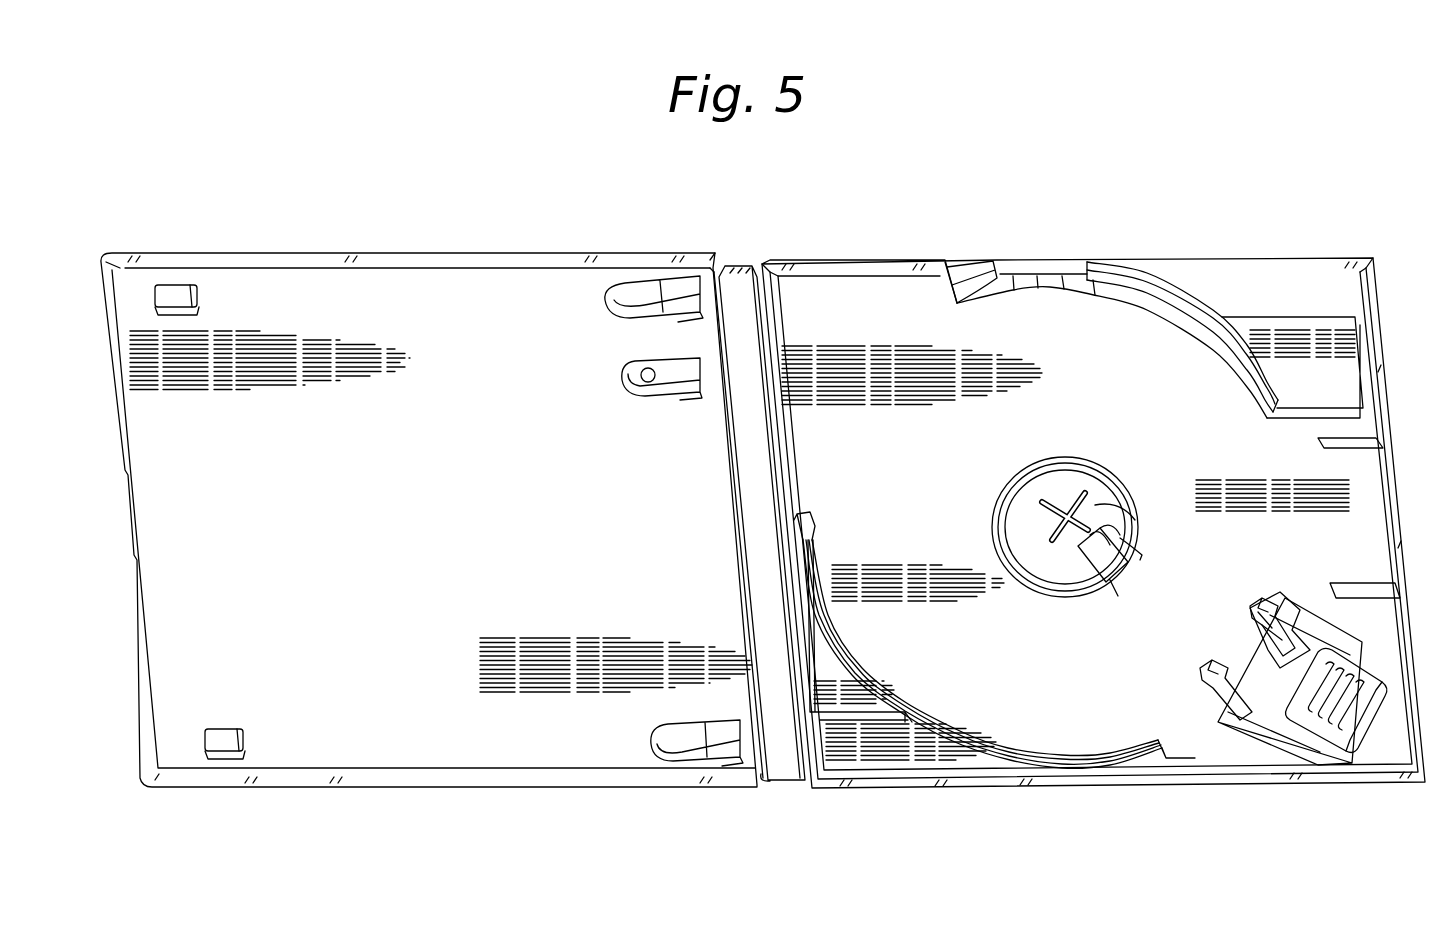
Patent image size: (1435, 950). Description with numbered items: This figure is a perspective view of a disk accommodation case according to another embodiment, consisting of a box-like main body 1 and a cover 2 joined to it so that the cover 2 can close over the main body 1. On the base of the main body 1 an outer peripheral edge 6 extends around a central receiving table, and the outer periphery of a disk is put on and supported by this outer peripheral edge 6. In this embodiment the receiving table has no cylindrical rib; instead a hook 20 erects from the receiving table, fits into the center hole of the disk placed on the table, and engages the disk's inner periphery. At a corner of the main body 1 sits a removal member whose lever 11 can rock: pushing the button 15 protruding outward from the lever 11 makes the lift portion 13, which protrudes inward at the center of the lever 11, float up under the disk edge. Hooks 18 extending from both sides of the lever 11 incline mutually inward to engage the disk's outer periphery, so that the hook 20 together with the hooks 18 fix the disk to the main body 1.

The main body 1 is at (1013, 645).
The cover 2 is at (522, 706).
The outer peripheral edge 6 is at (950, 292).
The lever 11 is at (1262, 755).
The lift portion 13 is at (1285, 656).
The button 15 is at (1350, 735).
The hooks 18 is at (1320, 614).
The hook 20 is at (1105, 496).